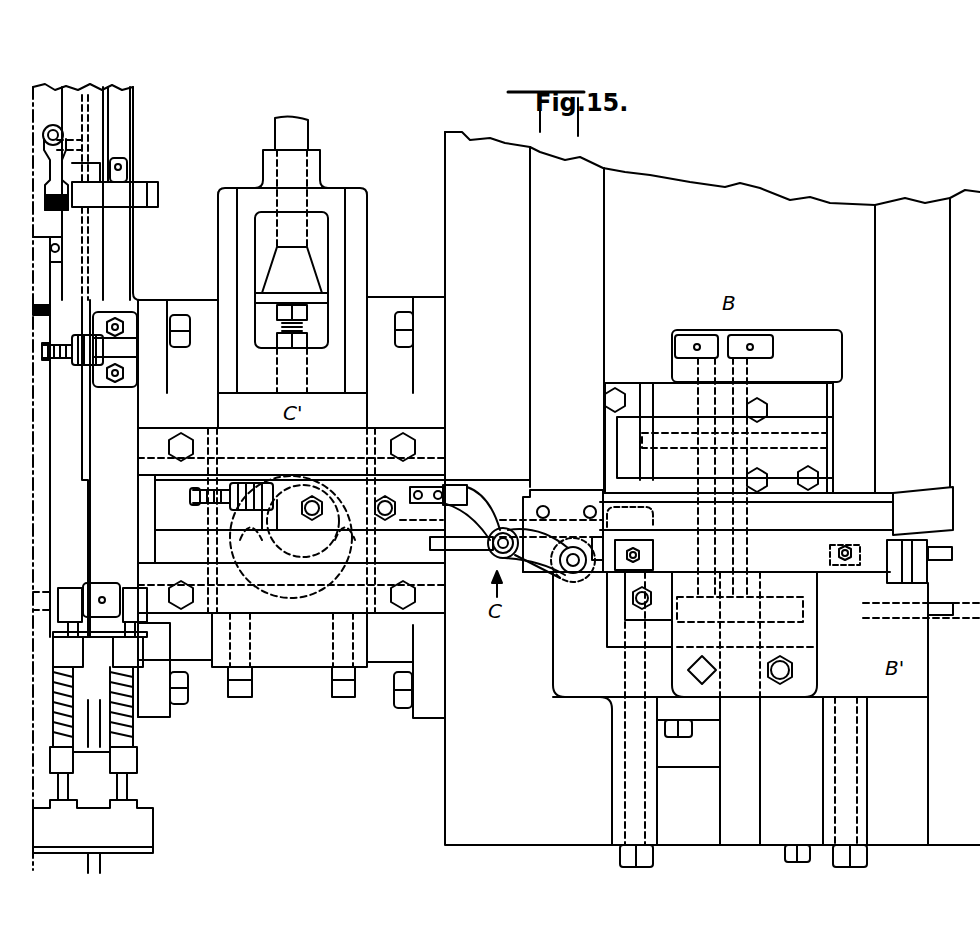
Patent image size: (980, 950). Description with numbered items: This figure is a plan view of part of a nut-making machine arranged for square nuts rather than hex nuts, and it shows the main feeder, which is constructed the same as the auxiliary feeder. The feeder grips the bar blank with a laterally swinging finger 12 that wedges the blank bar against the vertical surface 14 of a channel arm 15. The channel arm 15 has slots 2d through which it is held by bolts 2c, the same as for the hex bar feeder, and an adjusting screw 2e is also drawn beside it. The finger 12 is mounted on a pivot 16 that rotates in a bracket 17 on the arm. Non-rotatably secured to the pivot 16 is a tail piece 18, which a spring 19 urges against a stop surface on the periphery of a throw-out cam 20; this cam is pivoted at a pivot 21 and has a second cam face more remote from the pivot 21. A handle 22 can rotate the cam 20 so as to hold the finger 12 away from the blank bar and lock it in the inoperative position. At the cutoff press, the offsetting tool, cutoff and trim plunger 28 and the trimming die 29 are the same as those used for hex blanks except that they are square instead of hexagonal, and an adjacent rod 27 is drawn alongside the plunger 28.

The bolts 2c is at (318, 497).
The slots 2d is at (268, 490).
The adjusting screw 2e is at (207, 503).
The laterally swinging finger 12 is at (660, 548).
The vertical surface 14 is at (567, 505).
The channel arm 15 is at (646, 555).
The pivot 16 is at (586, 565).
The bracket 17 is at (560, 572).
The tail piece 18 is at (553, 562).
The spring 19 is at (460, 500).
The throw-out cam 20 is at (533, 557).
The pivot 21 is at (497, 556).
The handle 22 is at (452, 550).
The rod 27 is at (703, 520).
The offsetting tool, cutoff and trim plunger 28 is at (748, 515).
The trimming die 29 is at (775, 600).